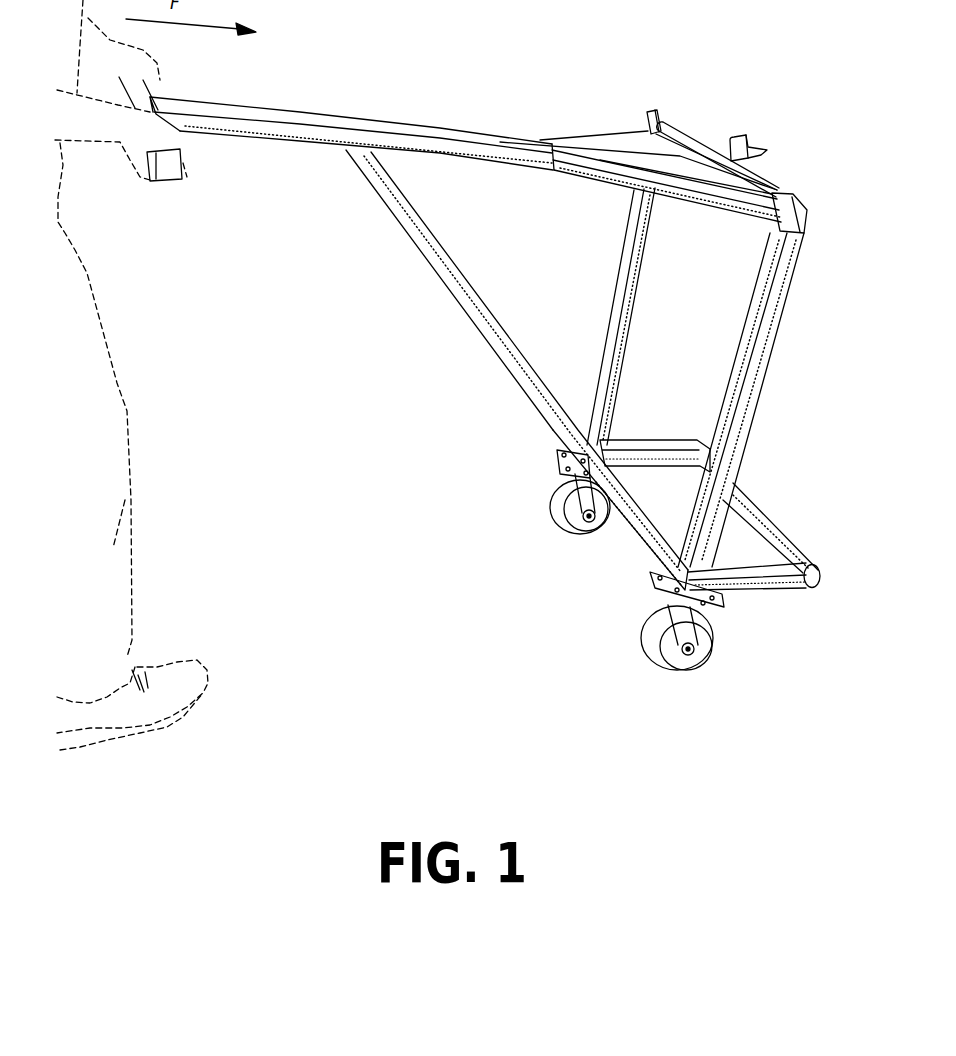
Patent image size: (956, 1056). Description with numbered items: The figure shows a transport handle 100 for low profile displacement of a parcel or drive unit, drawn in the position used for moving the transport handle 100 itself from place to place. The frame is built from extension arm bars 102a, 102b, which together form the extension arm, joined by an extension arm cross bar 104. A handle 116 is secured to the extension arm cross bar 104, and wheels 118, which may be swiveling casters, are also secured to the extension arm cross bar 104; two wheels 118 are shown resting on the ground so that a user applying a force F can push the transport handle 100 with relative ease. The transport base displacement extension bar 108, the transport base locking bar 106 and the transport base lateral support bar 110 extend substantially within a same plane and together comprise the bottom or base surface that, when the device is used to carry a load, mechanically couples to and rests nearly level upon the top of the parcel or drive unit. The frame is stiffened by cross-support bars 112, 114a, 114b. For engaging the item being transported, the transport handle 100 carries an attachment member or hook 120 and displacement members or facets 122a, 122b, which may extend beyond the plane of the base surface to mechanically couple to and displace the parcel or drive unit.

The transport handle 100 is at (392, 405).
The extension arm bar 102a is at (763, 268).
The extension arm bar 102b is at (620, 337).
The extension arm cross bar 104 is at (638, 507).
The transport base locking bar 106 is at (687, 137).
The transport base displacement extension bar 108 is at (293, 128).
The transport base lateral support bar 110 is at (148, 98).
The cross-support bar 112 is at (385, 190).
The cross-support bar 114a is at (603, 167).
The cross-support bar 114b is at (600, 138).
The handle 116 is at (770, 533).
The wheels 118 is at (660, 620).
The attachment member or hook 120 is at (740, 142).
The displacement member or facet 122a is at (783, 195).
The displacement member or facet 122b is at (655, 110).